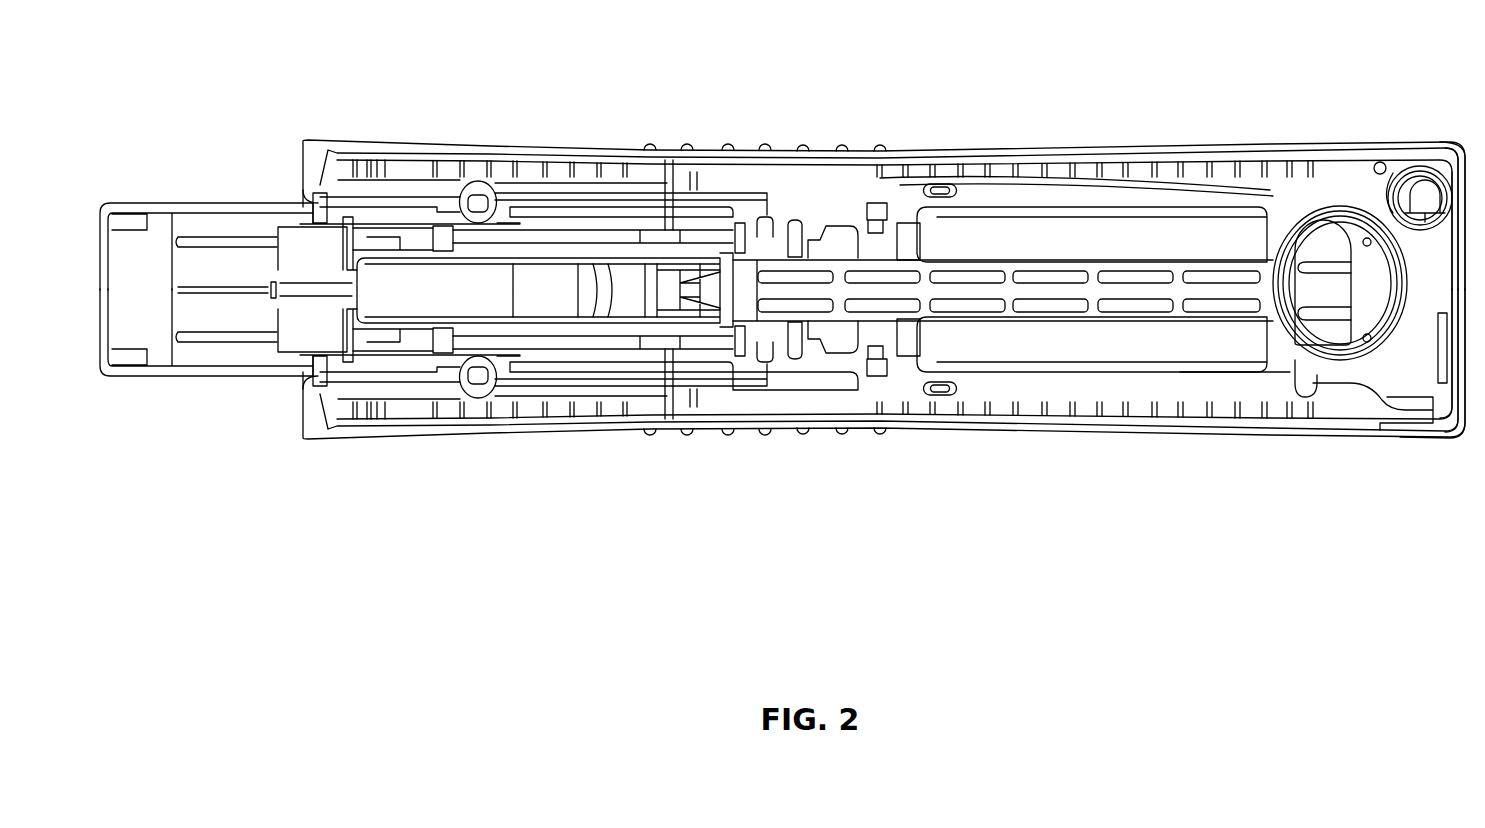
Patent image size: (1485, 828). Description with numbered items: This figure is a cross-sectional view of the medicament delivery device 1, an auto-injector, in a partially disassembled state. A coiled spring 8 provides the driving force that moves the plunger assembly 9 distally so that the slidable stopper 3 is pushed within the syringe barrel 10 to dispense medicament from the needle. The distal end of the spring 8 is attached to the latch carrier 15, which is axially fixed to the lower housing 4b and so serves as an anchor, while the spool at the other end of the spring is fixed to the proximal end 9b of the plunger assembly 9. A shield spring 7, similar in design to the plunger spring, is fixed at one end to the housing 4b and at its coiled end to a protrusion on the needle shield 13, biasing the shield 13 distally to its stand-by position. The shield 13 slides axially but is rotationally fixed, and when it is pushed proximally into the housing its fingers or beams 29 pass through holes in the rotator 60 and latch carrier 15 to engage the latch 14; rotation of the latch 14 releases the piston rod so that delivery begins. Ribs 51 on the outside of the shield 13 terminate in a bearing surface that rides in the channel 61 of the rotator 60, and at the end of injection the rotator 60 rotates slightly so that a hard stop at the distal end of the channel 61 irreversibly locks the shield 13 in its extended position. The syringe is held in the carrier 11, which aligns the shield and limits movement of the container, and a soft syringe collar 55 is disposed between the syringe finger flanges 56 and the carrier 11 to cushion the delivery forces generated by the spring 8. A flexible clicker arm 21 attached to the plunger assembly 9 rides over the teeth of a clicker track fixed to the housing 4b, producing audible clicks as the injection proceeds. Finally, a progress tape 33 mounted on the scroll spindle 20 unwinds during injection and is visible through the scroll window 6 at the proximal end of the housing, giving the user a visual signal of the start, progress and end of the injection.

The medicament delivery device 1 is at (1133, 72).
The slidable stopper 3 is at (540, 307).
The lower housing 4b is at (1333, 417).
The scroll window 6 is at (1438, 425).
The shield spring 7 is at (487, 405).
The coiled spring 8 is at (1345, 200).
The plunger assembly 9 is at (1117, 257).
The proximal end of the plunger assembly 9b is at (1323, 243).
The syringe barrel 10 is at (437, 237).
The carrier 11 is at (623, 237).
The needle shield 13 is at (218, 202).
The latch 14 is at (903, 233).
The latch carrier 15 is at (920, 387).
The scroll spindle 20 is at (1410, 180).
The clicker arm 21 is at (1330, 287).
The fingers or beams 29 is at (713, 210).
The tape 33 is at (1425, 165).
The rib 51 is at (530, 195).
The syringe collar 55 is at (760, 220).
The syringe finger flanges 56 is at (795, 222).
The rotator 60 is at (810, 380).
The channel 61 is at (740, 377).